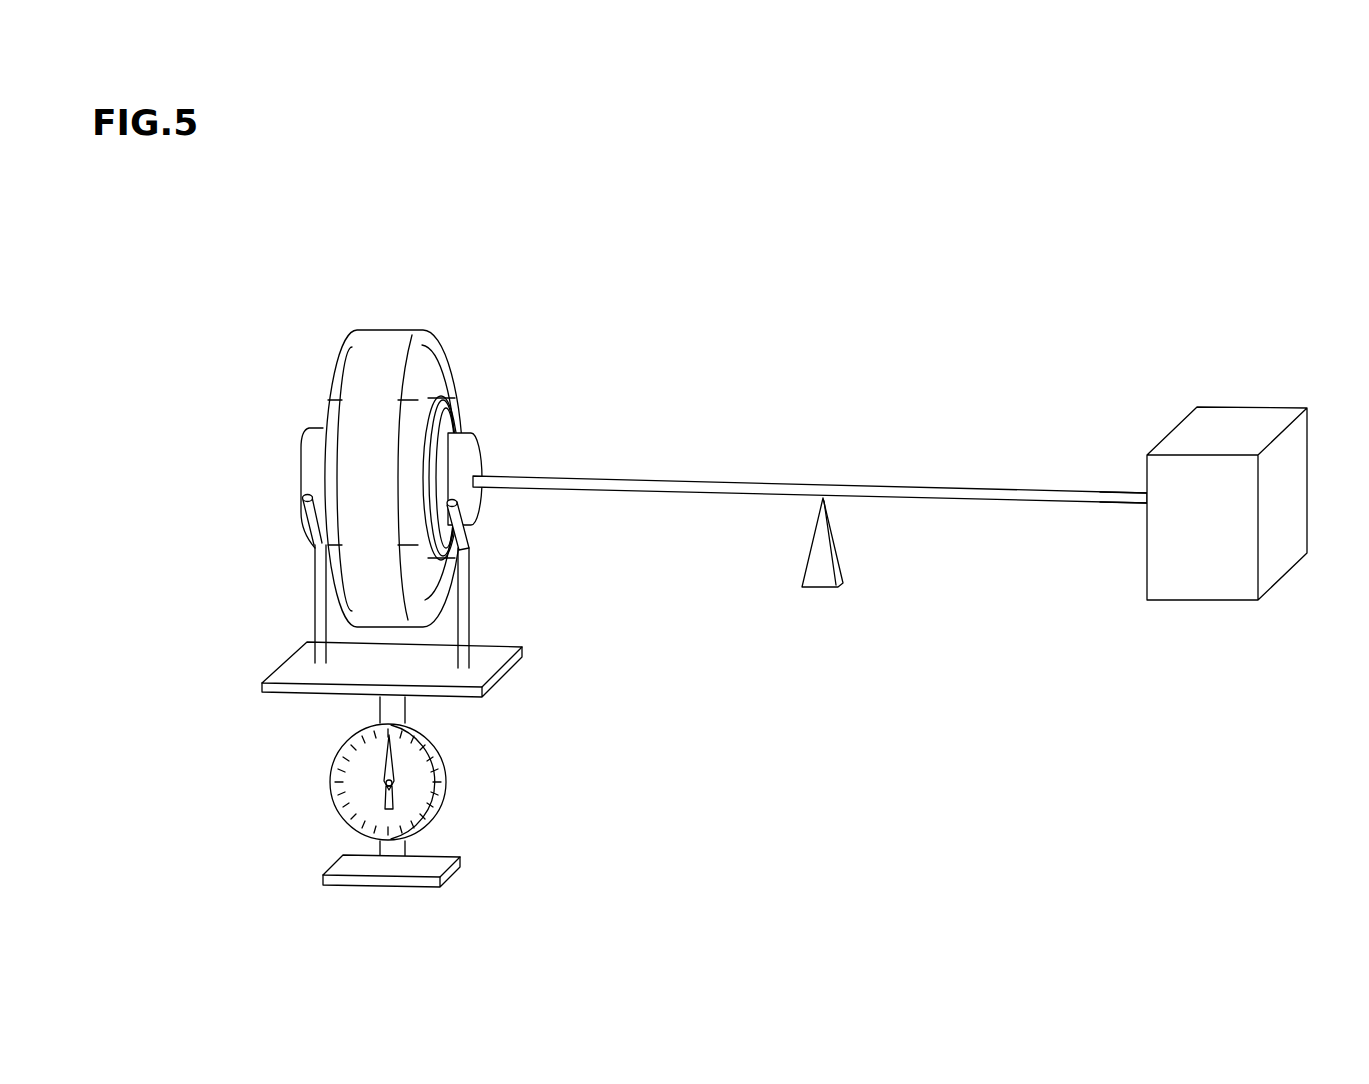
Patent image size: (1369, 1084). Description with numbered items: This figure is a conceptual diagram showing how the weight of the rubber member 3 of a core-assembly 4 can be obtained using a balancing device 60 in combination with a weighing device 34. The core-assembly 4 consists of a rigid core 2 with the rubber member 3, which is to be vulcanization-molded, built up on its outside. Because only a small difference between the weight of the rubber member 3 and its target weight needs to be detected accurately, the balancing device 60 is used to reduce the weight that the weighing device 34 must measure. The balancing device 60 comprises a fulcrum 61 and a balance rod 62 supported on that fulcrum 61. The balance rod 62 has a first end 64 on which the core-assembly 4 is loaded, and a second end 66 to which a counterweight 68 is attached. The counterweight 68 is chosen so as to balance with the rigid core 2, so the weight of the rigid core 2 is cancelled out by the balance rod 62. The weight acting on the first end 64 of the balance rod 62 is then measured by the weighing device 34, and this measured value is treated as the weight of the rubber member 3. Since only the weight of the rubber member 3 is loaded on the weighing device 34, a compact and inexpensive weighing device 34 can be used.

The core-assembly 4 is at (399, 401).
The rubber member 3 is at (383, 350).
The rigid core 2 is at (447, 372).
The first end 64 is at (480, 472).
The second end 66 is at (1146, 491).
The counterweight 68 is at (1236, 432).
The fulcrum 61 is at (822, 570).
The balance rod 62 is at (938, 495).
The balancing device 60 is at (810, 608).
The weighing device 34 is at (481, 772).